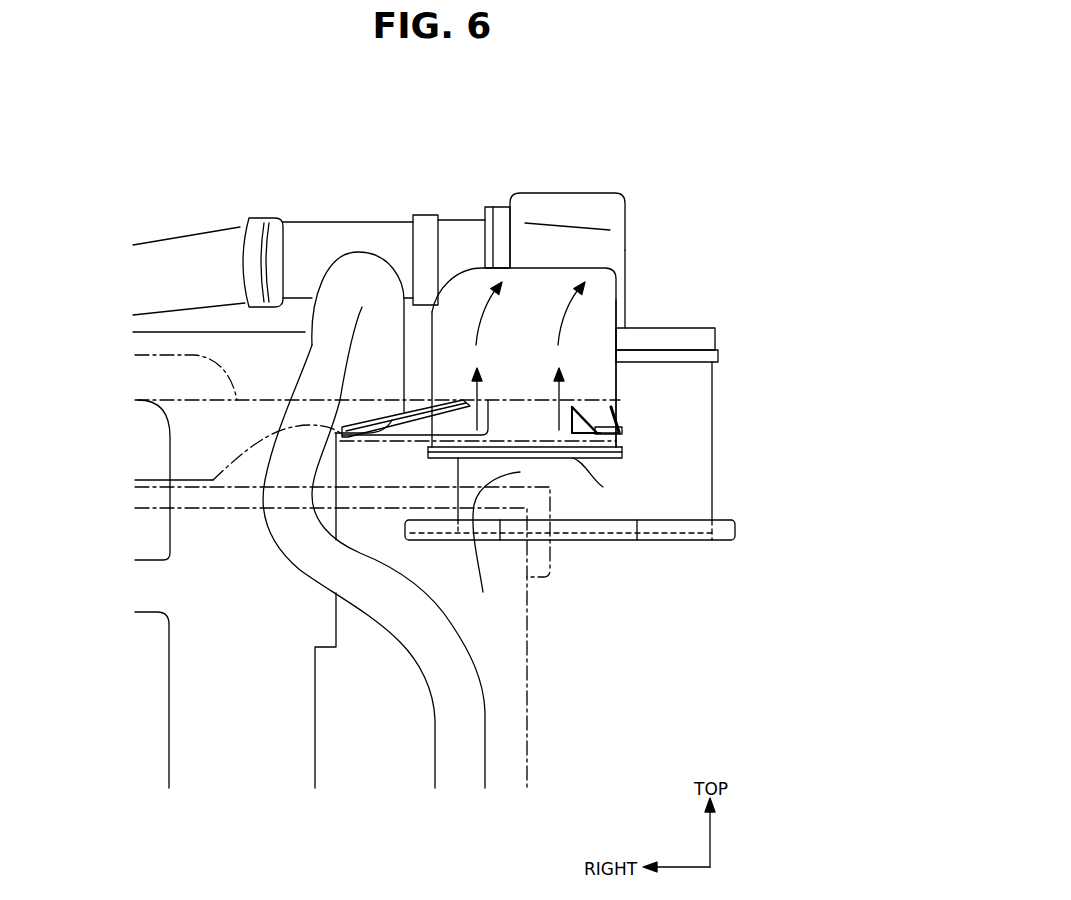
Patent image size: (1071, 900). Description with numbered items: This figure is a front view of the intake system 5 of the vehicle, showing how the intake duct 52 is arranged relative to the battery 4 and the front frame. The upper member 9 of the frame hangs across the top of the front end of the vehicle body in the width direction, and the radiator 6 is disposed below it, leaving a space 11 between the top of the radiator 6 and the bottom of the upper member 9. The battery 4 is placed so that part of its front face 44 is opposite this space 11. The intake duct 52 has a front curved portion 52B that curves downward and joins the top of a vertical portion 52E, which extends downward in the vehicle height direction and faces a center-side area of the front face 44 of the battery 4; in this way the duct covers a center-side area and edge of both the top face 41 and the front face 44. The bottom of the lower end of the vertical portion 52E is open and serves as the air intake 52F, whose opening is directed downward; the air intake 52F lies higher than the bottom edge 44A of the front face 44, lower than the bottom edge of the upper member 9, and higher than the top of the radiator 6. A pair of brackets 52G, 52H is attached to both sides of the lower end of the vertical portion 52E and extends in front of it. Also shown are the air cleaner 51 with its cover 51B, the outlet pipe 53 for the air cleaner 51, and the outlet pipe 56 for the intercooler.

The battery 4 is at (725, 457).
The intake system 5 is at (589, 115).
The radiator 6 is at (556, 502).
The upper member 9 is at (135, 355).
The space 11 is at (489, 539).
The top face 41 is at (655, 328).
The front face 44 is at (647, 463).
The bottom edge 44A is at (663, 540).
The air cleaner 51 is at (633, 243).
The cover 51B is at (588, 212).
The intake duct 52 is at (462, 264).
The front curved portion 52B is at (530, 298).
The vertical portion 52E is at (600, 373).
The air intake 52F is at (603, 487).
The bracket 52G is at (415, 430).
The bracket 52H is at (620, 412).
The outlet pipe 53 is at (325, 229).
The outlet pipe 56 is at (463, 690).